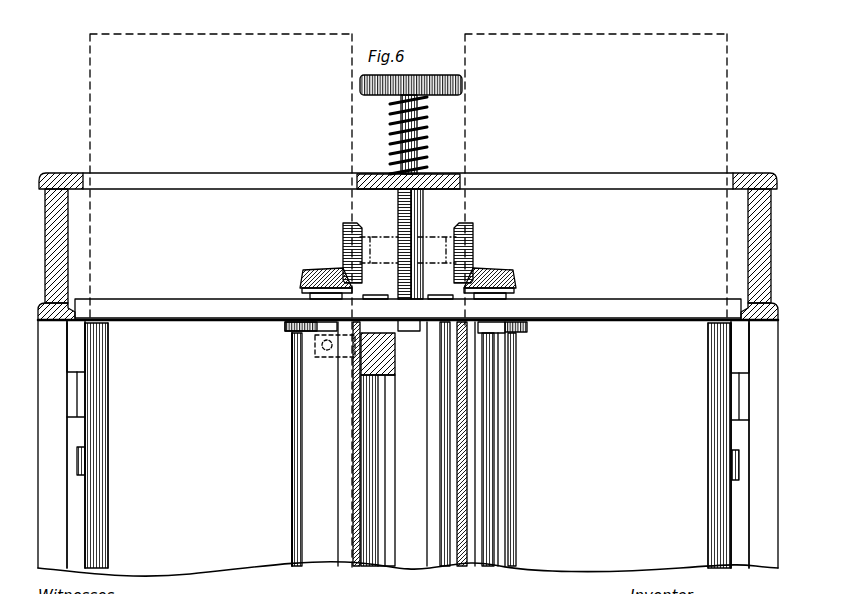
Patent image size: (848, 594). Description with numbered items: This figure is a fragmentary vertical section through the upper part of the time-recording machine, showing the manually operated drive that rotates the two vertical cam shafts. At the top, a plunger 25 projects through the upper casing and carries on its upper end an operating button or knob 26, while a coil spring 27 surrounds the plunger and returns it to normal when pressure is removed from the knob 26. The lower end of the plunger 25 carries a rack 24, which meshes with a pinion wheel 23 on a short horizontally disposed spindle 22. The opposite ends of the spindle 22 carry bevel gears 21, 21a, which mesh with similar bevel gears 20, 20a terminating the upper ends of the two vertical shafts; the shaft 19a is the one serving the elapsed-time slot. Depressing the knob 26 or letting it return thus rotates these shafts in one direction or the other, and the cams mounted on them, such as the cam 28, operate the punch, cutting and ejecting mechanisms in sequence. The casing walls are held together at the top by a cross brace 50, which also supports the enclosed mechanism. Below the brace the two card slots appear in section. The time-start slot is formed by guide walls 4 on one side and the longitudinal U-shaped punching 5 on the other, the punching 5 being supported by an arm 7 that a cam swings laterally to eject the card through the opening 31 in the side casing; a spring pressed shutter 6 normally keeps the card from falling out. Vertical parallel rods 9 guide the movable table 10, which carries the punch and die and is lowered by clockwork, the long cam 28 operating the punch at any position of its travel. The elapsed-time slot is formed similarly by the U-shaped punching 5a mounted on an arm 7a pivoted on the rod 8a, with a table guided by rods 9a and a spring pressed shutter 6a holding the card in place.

The operating button or knob 26 is at (462, 84).
The plunger 25 is at (428, 121).
The coil spring 27 is at (392, 110).
The rack 24 is at (450, 178).
The pinion wheel 23 is at (397, 236).
The spindle 22 is at (437, 250).
The bevel gear 21 is at (343, 241).
The bevel gear 20 is at (315, 278).
The bevel gear 21a is at (476, 239).
The bevel gear 20a is at (505, 275).
The cross brace 50 is at (617, 308).
The arm 7 is at (294, 327).
The arm 7a is at (521, 333).
The cam 28 is at (292, 398).
The longitudinal punching 5 is at (347, 508).
The U-shaped punching 5a is at (470, 512).
The movable table 10 is at (390, 376).
The vertical parallel rod 9 is at (378, 457).
The rod 9a is at (428, 496).
The rod 8a is at (515, 435).
The vertical shaft 19a is at (488, 470).
The opening 31 is at (404, 400).
The spring pressed shutter 6 is at (87, 503).
The spring pressed shutter 6a is at (732, 518).
The guide wall 4 is at (106, 500).